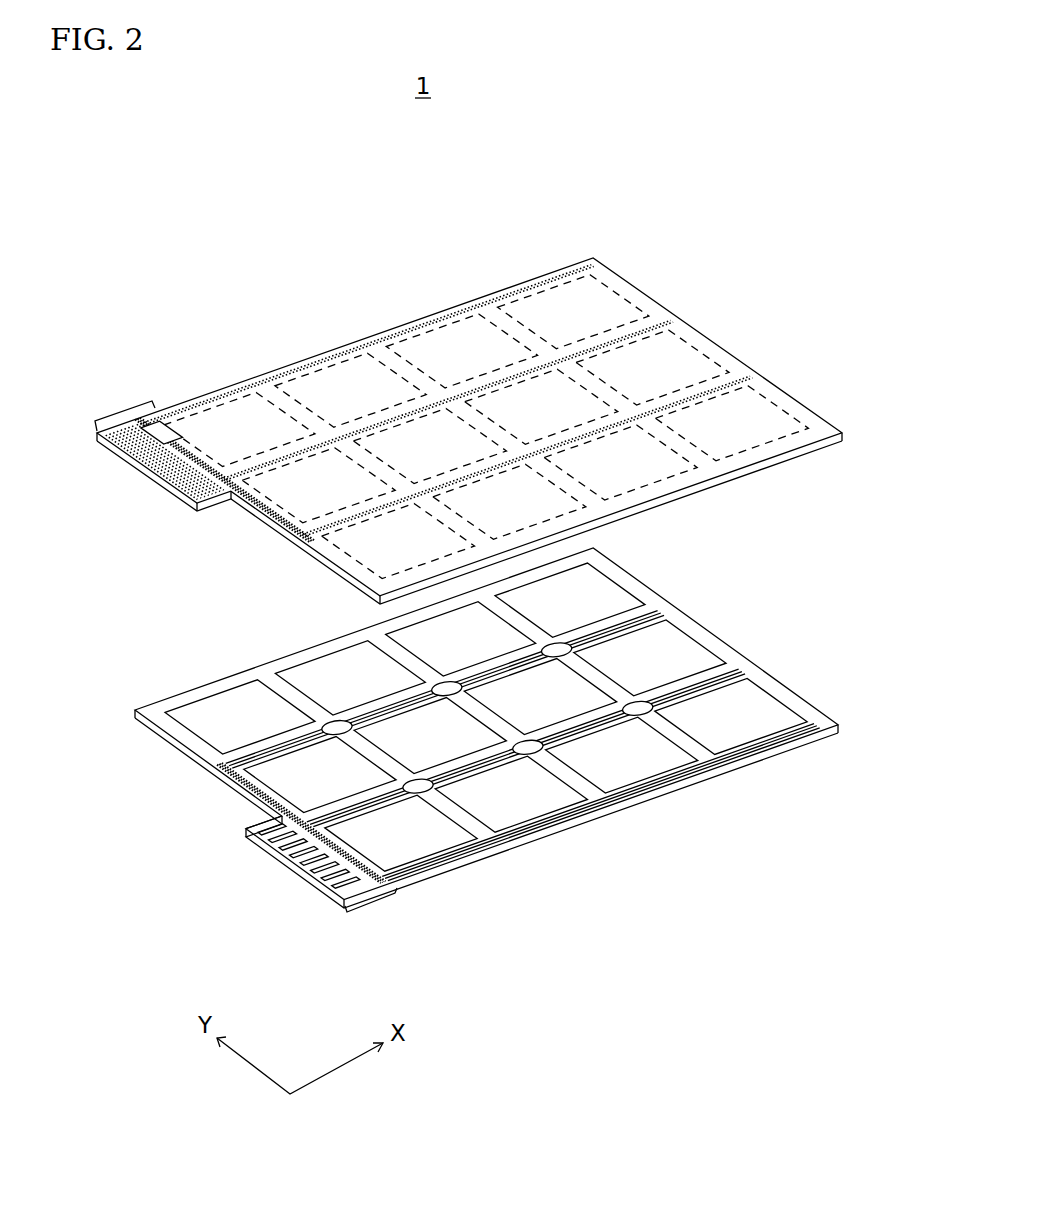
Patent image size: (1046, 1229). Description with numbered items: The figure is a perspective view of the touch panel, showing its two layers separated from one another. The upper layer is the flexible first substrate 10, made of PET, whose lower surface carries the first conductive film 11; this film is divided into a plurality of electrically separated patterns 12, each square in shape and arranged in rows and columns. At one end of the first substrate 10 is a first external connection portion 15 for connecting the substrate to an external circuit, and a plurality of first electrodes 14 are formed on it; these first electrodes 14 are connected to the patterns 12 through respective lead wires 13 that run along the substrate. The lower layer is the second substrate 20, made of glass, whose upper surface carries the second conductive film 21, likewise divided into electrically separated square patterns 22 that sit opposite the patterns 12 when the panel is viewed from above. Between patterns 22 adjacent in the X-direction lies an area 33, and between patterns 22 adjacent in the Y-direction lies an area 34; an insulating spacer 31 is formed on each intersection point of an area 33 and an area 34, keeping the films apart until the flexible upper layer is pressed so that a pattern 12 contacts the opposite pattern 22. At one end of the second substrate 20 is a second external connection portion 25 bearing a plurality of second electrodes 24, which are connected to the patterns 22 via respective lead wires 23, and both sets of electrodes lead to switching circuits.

The first substrate 10 is at (338, 347).
The first conductive film 11 is at (453, 334).
The pattern 12 is at (670, 363).
The lead wire 13 is at (227, 398).
The first electrode 14 is at (187, 481).
The first external connection portion 15 is at (123, 412).
The second substrate 20 is at (670, 605).
The second conductive film 21 is at (690, 660).
The pattern 22 is at (757, 713).
The lead wire 23 is at (532, 836).
The second electrode 24 is at (247, 829).
The second external connection portion 25 is at (371, 903).
The spacer 31 is at (633, 717).
The area 33 is at (493, 840).
The area 34 is at (390, 707).